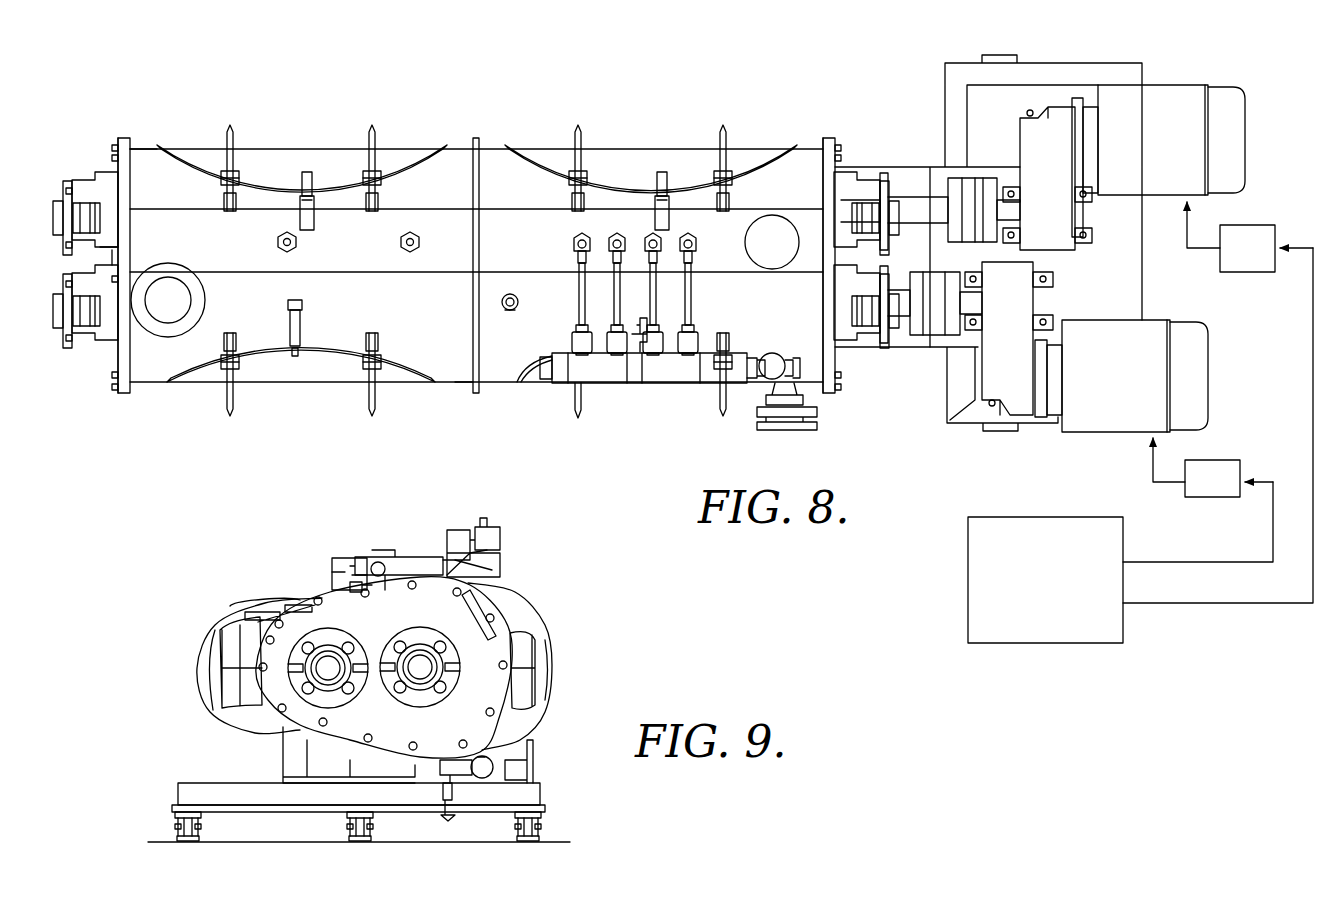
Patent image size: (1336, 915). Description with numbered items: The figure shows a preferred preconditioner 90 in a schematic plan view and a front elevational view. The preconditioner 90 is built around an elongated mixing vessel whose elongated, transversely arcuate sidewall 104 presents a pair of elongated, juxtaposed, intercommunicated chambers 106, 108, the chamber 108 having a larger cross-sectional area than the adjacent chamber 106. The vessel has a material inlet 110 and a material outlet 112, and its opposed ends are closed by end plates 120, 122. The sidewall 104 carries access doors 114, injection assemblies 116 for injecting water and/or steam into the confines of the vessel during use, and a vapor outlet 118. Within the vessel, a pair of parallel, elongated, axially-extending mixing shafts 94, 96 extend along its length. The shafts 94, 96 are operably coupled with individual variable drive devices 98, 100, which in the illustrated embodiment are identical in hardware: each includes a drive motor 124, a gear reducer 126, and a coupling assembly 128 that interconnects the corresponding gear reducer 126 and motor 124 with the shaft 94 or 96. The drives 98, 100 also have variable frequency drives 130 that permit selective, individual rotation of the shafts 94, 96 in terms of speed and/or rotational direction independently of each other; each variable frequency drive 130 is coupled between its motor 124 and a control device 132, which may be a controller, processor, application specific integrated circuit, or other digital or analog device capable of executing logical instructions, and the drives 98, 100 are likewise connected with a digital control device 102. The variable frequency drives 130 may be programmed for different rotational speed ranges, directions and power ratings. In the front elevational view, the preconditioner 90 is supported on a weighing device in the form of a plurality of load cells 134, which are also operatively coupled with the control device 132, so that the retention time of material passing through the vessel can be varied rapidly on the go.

In FIG. 8, the preconditioner 90 is at (770, 115).
In FIG. 9, the preconditioner 90 is at (548, 545).
In FIG. 8, the mixing shaft 94 is at (62, 205).
In FIG. 9, the mixing shaft 94 is at (330, 670).
In FIG. 8, the mixing shaft 96 is at (62, 318).
In FIG. 9, the mixing shaft 96 is at (423, 667).
In FIG. 8, the variable drive device 98 is at (1245, 73).
In FIG. 8, the variable drive device 100 is at (1110, 440).
In FIG. 8, the digital control device 102 is at (950, 597).
In FIG. 8, the sidewall 104 is at (492, 140).
In FIG. 8, the chamber 106 is at (455, 173).
In FIG. 9, the chamber 106 is at (270, 684).
In FIG. 8, the chamber 108 is at (457, 373).
In FIG. 9, the chamber 108 is at (490, 612).
In FIG. 8, the material inlet 110 is at (751, 259).
In FIG. 9, the material inlet 110 is at (345, 562).
In FIG. 9, the material outlet 112 is at (318, 763).
In FIG. 8, the access door 114 is at (330, 152).
In FIG. 8, the injection assembly 116 is at (573, 291).
In FIG. 8, the vapor outlet 118 is at (170, 272).
In FIG. 9, the vapor outlet 118 is at (415, 560).
In FIG. 8, the end plate 120 is at (118, 362).
In FIG. 9, the end plate 120 is at (472, 727).
In FIG. 8, the end plate 122 is at (832, 398).
In FIG. 8, the drive motor 124 is at (1168, 92).
In FIG. 8, the gear reducer 126 is at (1028, 143).
In FIG. 8, the coupling assembly 128 is at (957, 160).
In FIG. 8, the variable frequency drive 130 is at (1270, 225).
In FIG. 8, the control device 132 is at (968, 560).
In FIG. 9, the load cell 134 is at (175, 833).